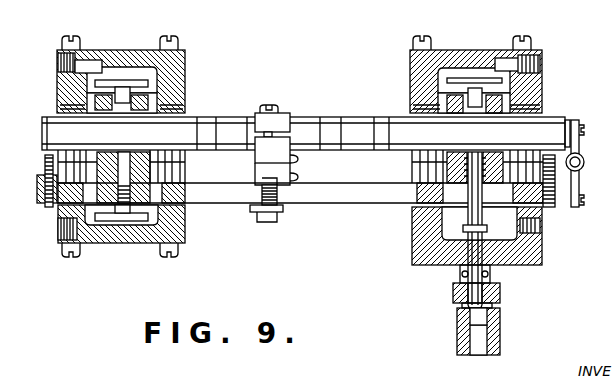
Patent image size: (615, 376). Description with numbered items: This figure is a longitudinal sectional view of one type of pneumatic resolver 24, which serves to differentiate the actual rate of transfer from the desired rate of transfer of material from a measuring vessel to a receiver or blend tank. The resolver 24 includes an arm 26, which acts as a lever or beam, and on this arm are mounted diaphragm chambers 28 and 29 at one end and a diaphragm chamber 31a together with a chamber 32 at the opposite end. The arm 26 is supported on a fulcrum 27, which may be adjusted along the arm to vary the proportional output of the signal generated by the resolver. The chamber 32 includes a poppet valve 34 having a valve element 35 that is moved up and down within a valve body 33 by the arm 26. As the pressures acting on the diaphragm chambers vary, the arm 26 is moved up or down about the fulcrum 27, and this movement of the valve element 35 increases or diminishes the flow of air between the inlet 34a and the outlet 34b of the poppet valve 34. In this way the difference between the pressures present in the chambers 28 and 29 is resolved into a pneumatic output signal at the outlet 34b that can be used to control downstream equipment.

The resolver 24 is at (452, 61).
The arm 26 is at (229, 117).
The fulcrum 27 is at (292, 168).
The diaphragm chamber 28 is at (130, 82).
The diaphragm chamber 29 is at (178, 222).
The diaphragm chamber 31a is at (440, 80).
The chamber 32 is at (479, 234).
The valve body 33 is at (162, 167).
The poppet valve 34 is at (493, 284).
The inlet 34a is at (492, 346).
The outlet 34b is at (542, 228).
The valve element 35 is at (515, 265).